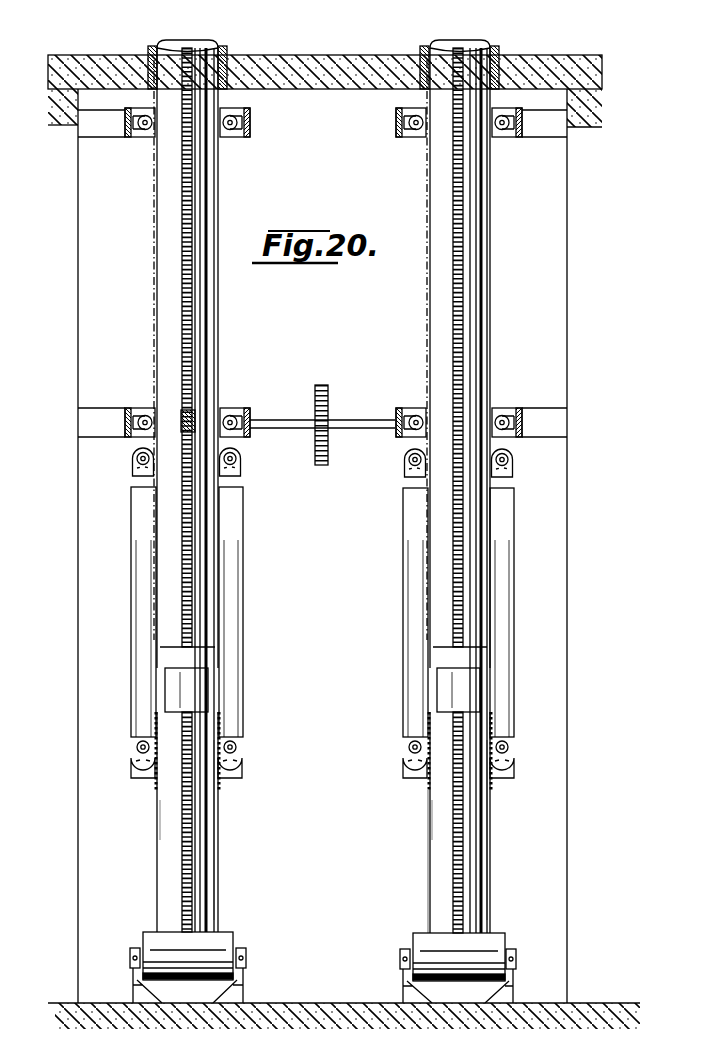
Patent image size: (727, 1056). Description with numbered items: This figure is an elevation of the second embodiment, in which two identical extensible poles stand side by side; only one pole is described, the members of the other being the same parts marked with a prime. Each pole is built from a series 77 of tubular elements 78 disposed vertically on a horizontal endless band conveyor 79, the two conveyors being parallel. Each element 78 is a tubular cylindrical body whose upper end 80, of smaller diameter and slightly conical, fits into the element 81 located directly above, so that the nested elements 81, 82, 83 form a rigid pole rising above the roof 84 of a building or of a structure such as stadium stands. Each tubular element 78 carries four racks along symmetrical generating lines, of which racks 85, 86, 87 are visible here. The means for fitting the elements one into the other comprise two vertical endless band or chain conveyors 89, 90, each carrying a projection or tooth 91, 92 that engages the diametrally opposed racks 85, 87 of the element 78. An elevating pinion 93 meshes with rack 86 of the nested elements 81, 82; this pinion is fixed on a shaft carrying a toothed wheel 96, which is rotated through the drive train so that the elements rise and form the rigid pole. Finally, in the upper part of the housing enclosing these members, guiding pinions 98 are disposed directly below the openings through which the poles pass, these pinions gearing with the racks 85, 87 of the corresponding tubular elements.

The series of tubular elements 77 is at (233, 822).
The tubular element 78 is at (203, 894).
The horizontal endless band conveyor 79 is at (222, 944).
The upper end 80 is at (200, 686).
The nested element 81 is at (205, 556).
The nested element 82 is at (168, 239).
The nested element 83 is at (178, 53).
The roof 84 is at (316, 66).
The rack 85 is at (215, 858).
The rack 86 is at (187, 884).
The rack 87 is at (428, 842).
The vertical endless band or chain conveyor 89 is at (243, 617).
The vertical endless band or chain conveyor 90 is at (132, 634).
The projection or tooth 91 is at (230, 738).
The projection or tooth 92 is at (142, 736).
The elevating pinion 93 is at (185, 414).
The toothed wheel 96 is at (327, 391).
The guiding pinion 98 is at (147, 139).